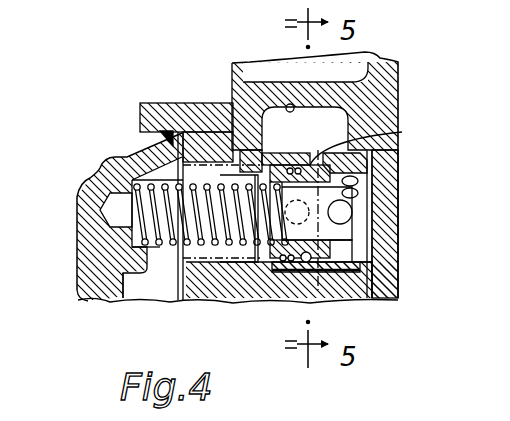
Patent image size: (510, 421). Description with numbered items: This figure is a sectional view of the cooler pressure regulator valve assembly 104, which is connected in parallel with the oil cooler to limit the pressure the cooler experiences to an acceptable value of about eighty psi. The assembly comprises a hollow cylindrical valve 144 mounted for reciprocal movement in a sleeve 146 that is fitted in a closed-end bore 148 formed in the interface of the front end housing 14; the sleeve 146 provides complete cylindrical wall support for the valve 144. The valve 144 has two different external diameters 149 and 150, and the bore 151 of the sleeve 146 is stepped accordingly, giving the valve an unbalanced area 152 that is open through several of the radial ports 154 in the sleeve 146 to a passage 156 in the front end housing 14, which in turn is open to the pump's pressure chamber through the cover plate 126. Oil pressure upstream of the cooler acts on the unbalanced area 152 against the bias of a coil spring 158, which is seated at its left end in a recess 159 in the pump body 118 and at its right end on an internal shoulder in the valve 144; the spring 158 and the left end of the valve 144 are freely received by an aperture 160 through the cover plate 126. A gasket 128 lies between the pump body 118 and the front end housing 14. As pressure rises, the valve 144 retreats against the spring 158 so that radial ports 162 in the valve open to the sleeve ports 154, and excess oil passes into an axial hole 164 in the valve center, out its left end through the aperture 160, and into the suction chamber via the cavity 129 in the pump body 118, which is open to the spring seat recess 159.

The front end housing 14 is at (388, 68).
The cooler pressure regulator valve assembly 104 is at (375, 157).
The pump body 118 is at (90, 178).
The cover plate 126 is at (212, 147).
The gasket 128 is at (247, 106).
The cavity 129 is at (112, 300).
The hollow cylindrical valve 144 is at (268, 258).
The sleeve 146 is at (365, 265).
The closed-end bore 148 is at (365, 278).
The external diameter 149 is at (200, 260).
The external diameter 150 is at (332, 262).
The bore of the sleeve 151 is at (356, 183).
The unbalanced area 152 is at (272, 270).
The radial ports 154 is at (373, 144).
The passage 156 is at (288, 104).
The coil spring 158 is at (113, 300).
The recess 159 is at (133, 242).
The aperture 160 is at (162, 245).
The radial ports 162 is at (357, 194).
The axial hole 164 is at (318, 250).